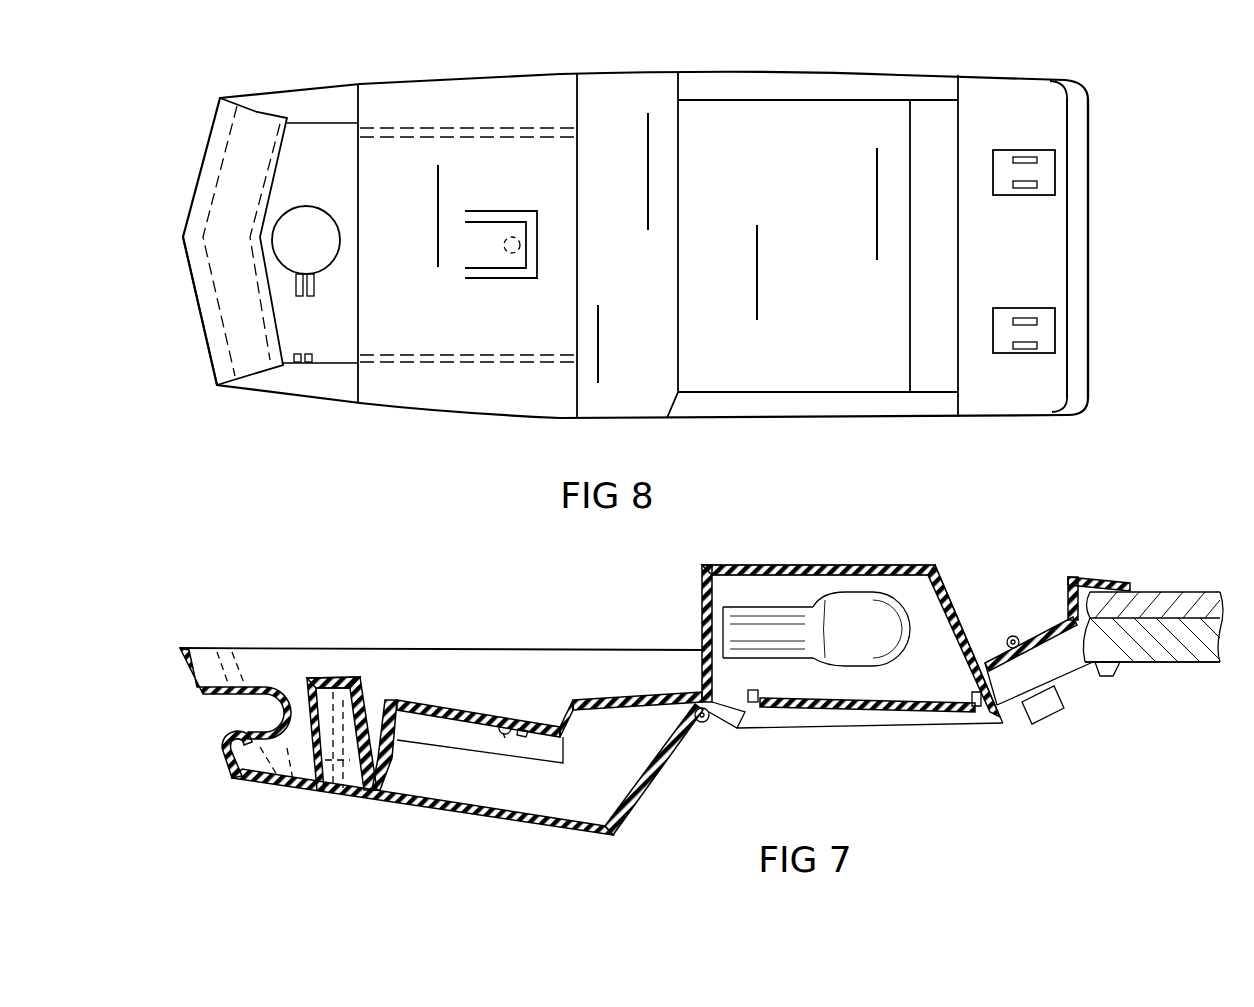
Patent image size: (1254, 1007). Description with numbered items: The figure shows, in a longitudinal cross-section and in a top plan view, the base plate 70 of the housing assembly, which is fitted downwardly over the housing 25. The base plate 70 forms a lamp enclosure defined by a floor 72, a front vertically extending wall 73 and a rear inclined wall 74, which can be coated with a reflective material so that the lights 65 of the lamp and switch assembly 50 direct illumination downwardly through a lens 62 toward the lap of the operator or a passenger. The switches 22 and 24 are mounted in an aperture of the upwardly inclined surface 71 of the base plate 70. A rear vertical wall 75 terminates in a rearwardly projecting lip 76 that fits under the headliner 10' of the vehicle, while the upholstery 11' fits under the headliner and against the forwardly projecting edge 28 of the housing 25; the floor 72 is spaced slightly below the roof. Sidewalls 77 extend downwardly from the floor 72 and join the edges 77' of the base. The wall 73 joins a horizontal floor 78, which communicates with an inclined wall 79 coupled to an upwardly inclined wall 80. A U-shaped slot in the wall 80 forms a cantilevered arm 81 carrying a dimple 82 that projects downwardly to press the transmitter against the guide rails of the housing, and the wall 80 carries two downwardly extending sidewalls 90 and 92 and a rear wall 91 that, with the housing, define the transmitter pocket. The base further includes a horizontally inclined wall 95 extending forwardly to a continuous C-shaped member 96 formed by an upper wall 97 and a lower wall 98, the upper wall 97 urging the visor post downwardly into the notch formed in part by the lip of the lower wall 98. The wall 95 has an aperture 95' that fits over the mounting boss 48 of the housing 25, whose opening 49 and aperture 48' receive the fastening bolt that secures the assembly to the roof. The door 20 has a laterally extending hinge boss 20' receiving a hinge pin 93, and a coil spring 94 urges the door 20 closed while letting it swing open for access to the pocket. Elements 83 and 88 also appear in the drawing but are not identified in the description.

In FIG. 7, the headliner 10' is at (1153, 606).
In FIG. 7, the upholstery 11' is at (1154, 689).
In FIG. 7, the door 20 is at (664, 769).
In FIG. 7, the hinge boss 20' is at (676, 726).
In FIG. 8, the switch 22 is at (1003, 348).
In FIG. 7, the switch 22 is at (1042, 708).
In FIG. 8, the switch 24 is at (1000, 160).
In FIG. 7, the housing 25 is at (466, 813).
In FIG. 7, the forwardly projecting edge 28 is at (1112, 673).
In FIG. 7, the mounting boss 48 is at (351, 702).
In FIG. 7, the aperture 48' is at (330, 644).
In FIG. 7, the opening 49 is at (337, 792).
In FIG. 7, the lamp and switch assembly 50 is at (977, 732).
In FIG. 7, the lens 62 is at (868, 708).
In FIG. 7, the light 65 is at (878, 607).
In FIG. 8, the base plate 70 is at (1028, 418).
In FIG. 7, the base plate 70 is at (752, 566).
In FIG. 8, the upwardly inclined surface 71 is at (1018, 259).
In FIG. 7, the upwardly inclined surface 71 is at (1058, 630).
In FIG. 8, the floor 72 is at (800, 204).
In FIG. 7, the floor 72 is at (828, 565).
In FIG. 8, the front vertically extending wall 73 is at (680, 222).
In FIG. 7, the front vertically extending wall 73 is at (702, 590).
In FIG. 8, the rear inclined wall 74 is at (943, 245).
In FIG. 7, the rear inclined wall 74 is at (950, 595).
In FIG. 8, the rear vertical wall 75 is at (1078, 113).
In FIG. 7, the rear vertical wall 75 is at (1068, 592).
In FIG. 8, the rearwardly projecting lip 76 is at (1088, 200).
In FIG. 7, the rearwardly projecting lip 76 is at (1105, 580).
In FIG. 8, the sidewalls 77 is at (818, 222).
In FIG. 7, the sidewalls 77 is at (829, 612).
In FIG. 8, the edges 77' is at (818, 247).
In FIG. 8, the horizontal floor 78 is at (630, 289).
In FIG. 7, the horizontal floor 78 is at (639, 698).
In FIG. 8, the inclined wall 79 is at (577, 165).
In FIG. 7, the inclined wall 79 is at (560, 725).
In FIG. 8, the upwardly inclined wall 80 is at (485, 316).
In FIG. 7, the upwardly inclined wall 80 is at (436, 706).
In FIG. 8, the cantilevered arm 81 is at (500, 225).
In FIG. 7, the cantilevered arm 81 is at (502, 718).
In FIG. 8, the dimple 82 is at (533, 222).
In FIG. 7, the dimple 82 is at (523, 727).
In FIG. 7, the rib 83 is at (502, 732).
In FIG. 8, the switch 88 is at (504, 246).
In FIG. 8, the sidewall 90 is at (408, 137).
In FIG. 7, the sidewall 90 is at (563, 757).
In FIG. 8, the rear wall 91 is at (358, 196).
In FIG. 7, the rear wall 91 is at (392, 712).
In FIG. 8, the sidewall 92 is at (397, 355).
In FIG. 7, the hinge pin 93 is at (750, 702).
In FIG. 7, the coil spring 94 is at (737, 730).
In FIG. 8, the horizontally inclined wall 95 is at (280, 218).
In FIG. 8, the aperture 95' is at (306, 232).
In FIG. 8, the C-shaped member 96 is at (212, 368).
In FIG. 7, the upper wall 97 is at (263, 694).
In FIG. 7, the lower wall 98 is at (245, 735).